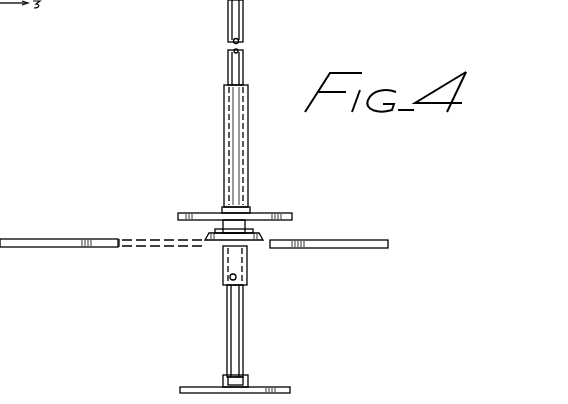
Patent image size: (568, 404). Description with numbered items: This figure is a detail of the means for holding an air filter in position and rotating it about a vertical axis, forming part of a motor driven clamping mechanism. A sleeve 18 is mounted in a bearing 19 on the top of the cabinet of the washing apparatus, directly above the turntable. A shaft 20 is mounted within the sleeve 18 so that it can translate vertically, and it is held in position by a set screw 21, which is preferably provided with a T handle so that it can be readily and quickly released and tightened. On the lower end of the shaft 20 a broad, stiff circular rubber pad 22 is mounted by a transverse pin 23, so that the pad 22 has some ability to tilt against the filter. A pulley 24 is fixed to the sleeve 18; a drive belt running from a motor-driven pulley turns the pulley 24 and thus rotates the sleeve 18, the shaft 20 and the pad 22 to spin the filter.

The sleeve 18 is at (249, 150).
The bearing 19 is at (263, 230).
The shaft 20 is at (244, 27).
The set screw 21 is at (222, 279).
The circular rubber pad 22 is at (262, 387).
The transverse pin 23 is at (250, 378).
The pulley 24 is at (265, 212).